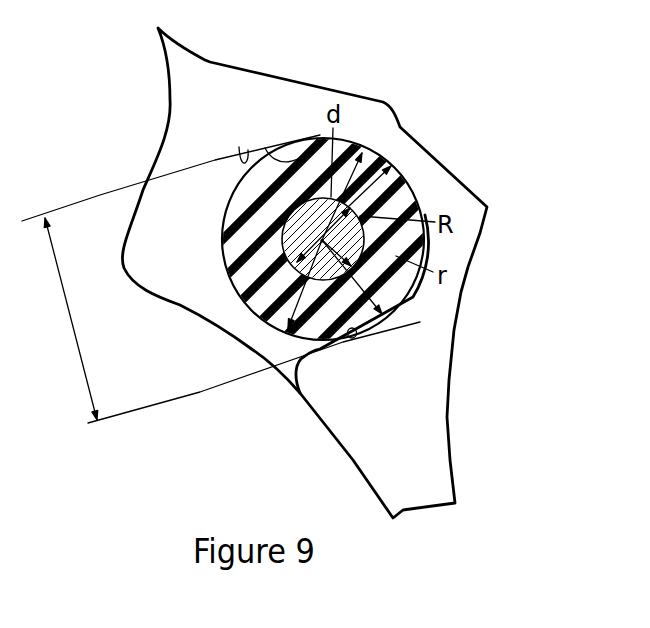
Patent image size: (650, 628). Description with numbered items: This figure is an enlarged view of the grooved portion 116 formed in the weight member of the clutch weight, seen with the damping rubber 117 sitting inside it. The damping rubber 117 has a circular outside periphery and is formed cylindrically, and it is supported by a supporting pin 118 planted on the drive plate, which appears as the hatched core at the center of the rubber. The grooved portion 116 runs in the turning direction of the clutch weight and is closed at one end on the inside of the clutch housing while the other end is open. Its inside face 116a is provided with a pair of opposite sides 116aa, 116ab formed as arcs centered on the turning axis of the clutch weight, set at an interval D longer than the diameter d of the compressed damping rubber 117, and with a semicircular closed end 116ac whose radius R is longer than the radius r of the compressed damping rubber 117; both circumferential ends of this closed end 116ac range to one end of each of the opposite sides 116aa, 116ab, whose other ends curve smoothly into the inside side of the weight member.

The grooved portion 116 is at (262, 345).
The inside face 116a is at (318, 138).
The opposite side 116aa is at (238, 155).
The opposite side 116ab is at (363, 336).
The semicircular closed end 116ac is at (370, 160).
The damping rubber 117 is at (246, 225).
The supporting pin 118 is at (284, 273).